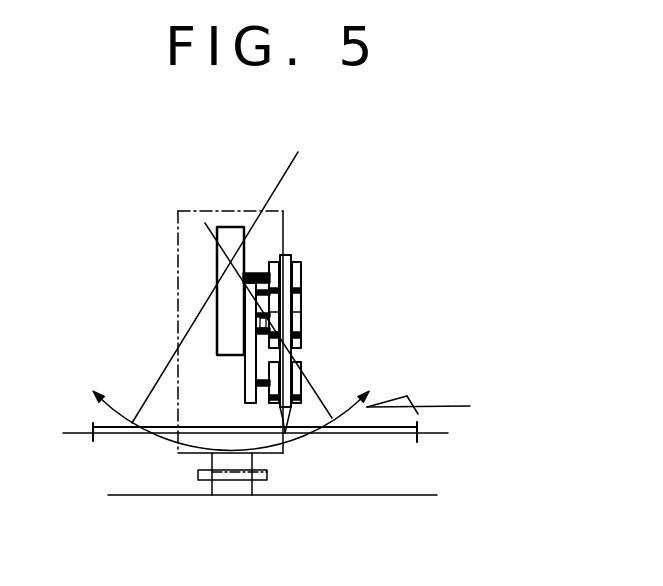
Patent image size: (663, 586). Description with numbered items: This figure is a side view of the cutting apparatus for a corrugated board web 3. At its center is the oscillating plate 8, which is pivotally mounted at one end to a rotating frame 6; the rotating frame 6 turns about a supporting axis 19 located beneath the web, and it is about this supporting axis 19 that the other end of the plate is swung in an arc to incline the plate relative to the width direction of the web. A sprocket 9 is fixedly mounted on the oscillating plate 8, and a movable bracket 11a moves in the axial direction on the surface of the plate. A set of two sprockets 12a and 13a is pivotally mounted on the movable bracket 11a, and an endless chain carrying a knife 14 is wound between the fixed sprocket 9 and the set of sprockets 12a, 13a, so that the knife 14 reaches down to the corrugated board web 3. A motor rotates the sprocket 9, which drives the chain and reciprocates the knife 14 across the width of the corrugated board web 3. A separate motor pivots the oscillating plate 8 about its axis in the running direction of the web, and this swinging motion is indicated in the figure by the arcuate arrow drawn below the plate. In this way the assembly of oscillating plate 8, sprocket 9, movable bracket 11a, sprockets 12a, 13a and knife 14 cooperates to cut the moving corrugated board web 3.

The corrugated board web 3 is at (398, 437).
The rotating frame 6 is at (183, 213).
The oscillating plate 8 is at (224, 312).
The sprocket 9 is at (298, 262).
The movable bracket 11a is at (247, 375).
The sprocket 12a is at (300, 308).
The sprocket 13a is at (300, 380).
The knife 14 is at (290, 420).
The supporting axis 19 is at (223, 485).